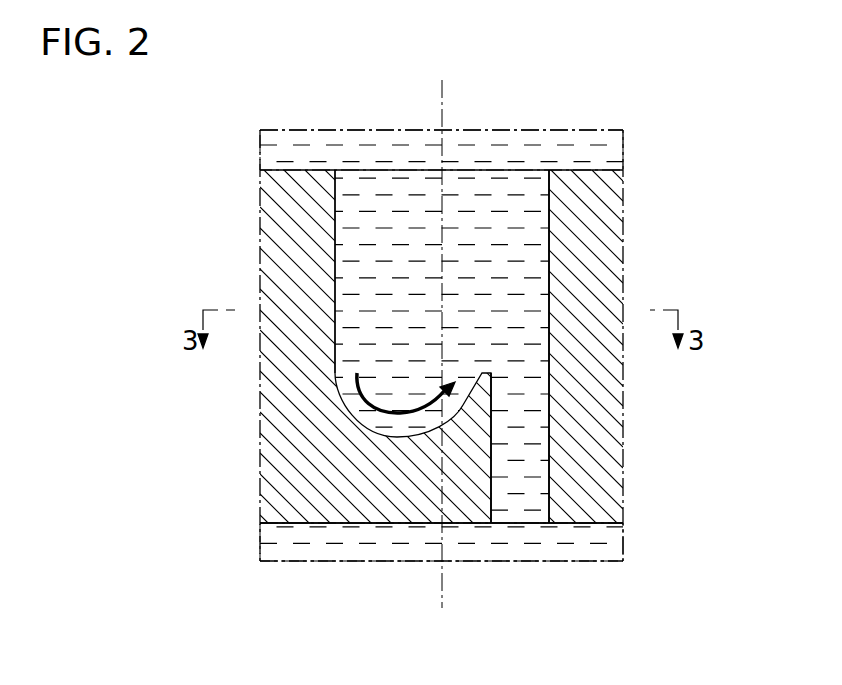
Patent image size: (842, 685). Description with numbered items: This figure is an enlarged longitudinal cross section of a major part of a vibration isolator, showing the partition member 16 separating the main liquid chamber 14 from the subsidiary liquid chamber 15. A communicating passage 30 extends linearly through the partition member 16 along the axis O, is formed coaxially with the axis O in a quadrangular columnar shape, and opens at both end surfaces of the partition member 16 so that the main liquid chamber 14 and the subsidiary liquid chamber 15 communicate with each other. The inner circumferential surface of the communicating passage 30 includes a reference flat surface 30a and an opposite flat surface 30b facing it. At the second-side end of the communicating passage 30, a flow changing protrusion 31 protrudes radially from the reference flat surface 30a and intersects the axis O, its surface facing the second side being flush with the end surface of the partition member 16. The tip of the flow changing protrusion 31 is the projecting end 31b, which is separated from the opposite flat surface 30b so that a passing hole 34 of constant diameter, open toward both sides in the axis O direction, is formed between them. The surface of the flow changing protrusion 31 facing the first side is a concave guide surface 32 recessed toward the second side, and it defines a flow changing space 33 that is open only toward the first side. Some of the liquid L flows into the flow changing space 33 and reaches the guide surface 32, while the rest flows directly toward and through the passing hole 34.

The main liquid chamber 14 is at (262, 149).
The subsidiary liquid chamber 15 is at (267, 542).
The partition member 16 is at (270, 277).
The communicating passage 30 is at (385, 180).
The reference flat surface 30a is at (337, 242).
The opposite flat surface 30b is at (549, 275).
The flow changing protrusion 31 is at (403, 523).
The projecting end 31b is at (492, 467).
The guide surface 32 is at (395, 432).
The flow changing space 33 is at (455, 404).
The passing hole 34 is at (540, 452).
The liquid L is at (520, 205).
The axis O is at (442, 103).